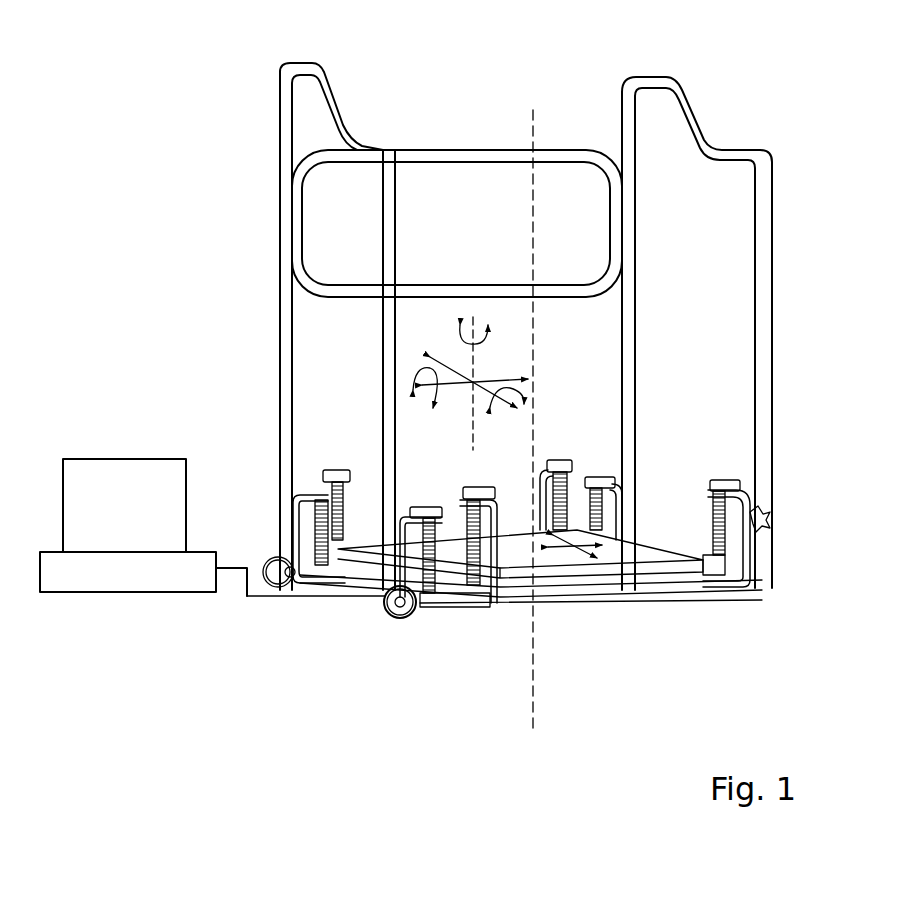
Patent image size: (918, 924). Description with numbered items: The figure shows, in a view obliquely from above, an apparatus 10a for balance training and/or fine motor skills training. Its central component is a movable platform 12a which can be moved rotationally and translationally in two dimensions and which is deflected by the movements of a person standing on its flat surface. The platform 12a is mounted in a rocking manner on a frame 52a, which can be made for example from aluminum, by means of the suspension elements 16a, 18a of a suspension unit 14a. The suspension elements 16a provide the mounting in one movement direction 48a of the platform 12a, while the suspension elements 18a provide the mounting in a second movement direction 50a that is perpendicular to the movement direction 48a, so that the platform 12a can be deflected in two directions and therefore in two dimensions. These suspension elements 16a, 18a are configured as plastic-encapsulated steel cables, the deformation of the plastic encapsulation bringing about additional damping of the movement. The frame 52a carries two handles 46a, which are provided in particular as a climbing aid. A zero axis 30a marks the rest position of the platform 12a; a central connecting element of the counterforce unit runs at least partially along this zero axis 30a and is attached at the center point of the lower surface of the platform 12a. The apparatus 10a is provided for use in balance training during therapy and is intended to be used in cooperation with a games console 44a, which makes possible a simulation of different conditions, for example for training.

The apparatus 10a is at (272, 294).
The movable platform 12a is at (512, 578).
The suspension unit 14a is at (300, 483).
The suspension elements 16a is at (320, 580).
The suspension elements 18a is at (328, 478).
The zero axis 30a is at (535, 625).
The games console 44a is at (125, 576).
The handles 46a is at (287, 78).
The movement direction 48a is at (560, 538).
The movement direction 50a is at (640, 575).
The frame 52a is at (272, 212).